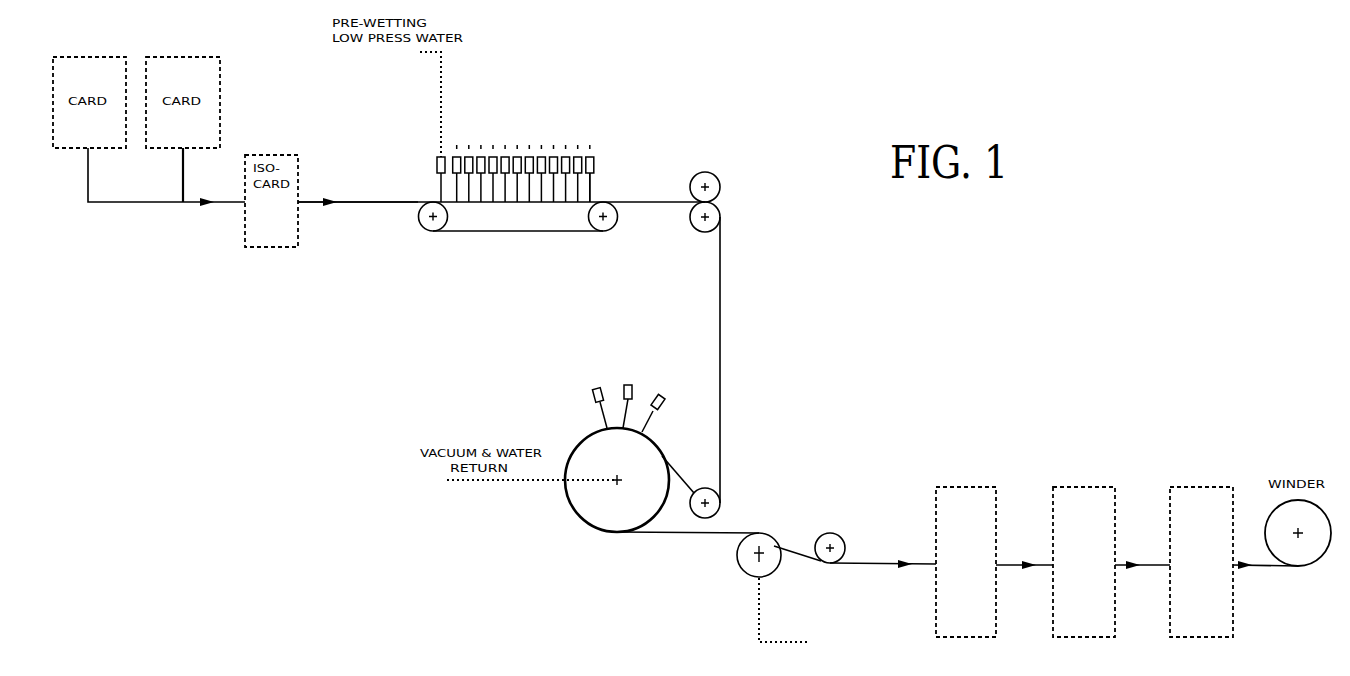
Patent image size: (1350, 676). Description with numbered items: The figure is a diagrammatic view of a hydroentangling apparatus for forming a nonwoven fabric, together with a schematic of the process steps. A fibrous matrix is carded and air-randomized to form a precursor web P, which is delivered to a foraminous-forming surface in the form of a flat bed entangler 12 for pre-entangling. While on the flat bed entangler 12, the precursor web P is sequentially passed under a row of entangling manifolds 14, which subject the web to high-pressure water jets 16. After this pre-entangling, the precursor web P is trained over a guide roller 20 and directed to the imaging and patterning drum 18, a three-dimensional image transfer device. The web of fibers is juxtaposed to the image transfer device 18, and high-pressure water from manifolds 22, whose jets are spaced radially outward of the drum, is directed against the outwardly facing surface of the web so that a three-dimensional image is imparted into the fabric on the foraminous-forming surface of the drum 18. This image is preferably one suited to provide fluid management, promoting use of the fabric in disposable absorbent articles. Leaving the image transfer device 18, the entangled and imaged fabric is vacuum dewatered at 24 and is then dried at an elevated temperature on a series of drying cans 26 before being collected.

The precursor web P is at (365, 203).
The flat bed entangler 12 is at (550, 231).
The entangling manifolds 14 is at (594, 165).
The high-pressure water jets 16 is at (591, 182).
The imaging and patterning drum 18 is at (587, 505).
The guide roller 20 is at (708, 488).
The manifolds 22 is at (623, 385).
The vacuum dewatering 24 is at (752, 577).
The drying cans 26 is at (1053, 490).